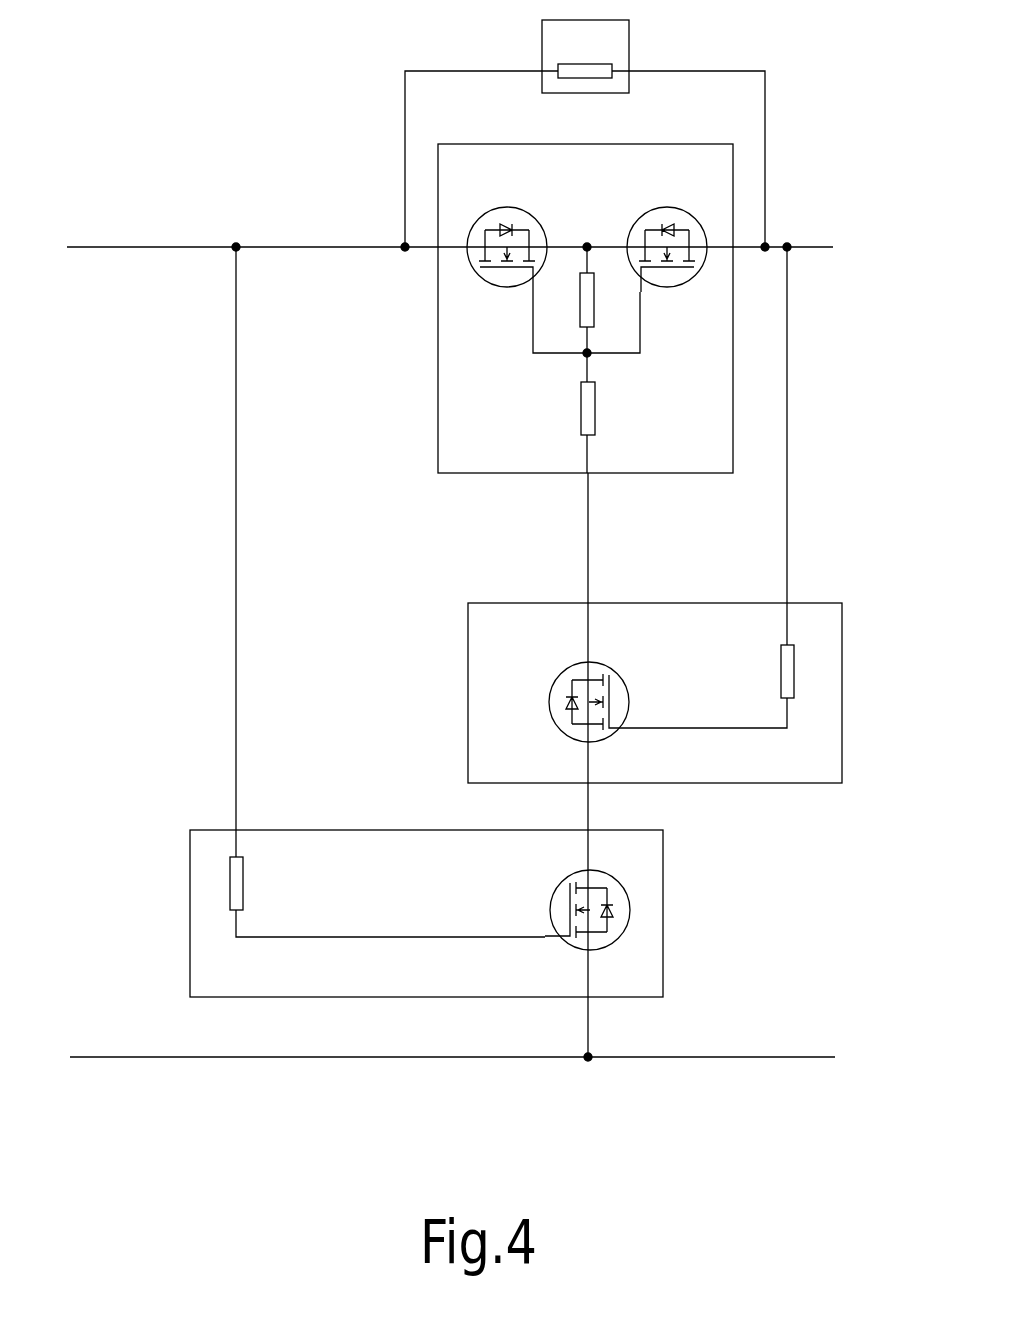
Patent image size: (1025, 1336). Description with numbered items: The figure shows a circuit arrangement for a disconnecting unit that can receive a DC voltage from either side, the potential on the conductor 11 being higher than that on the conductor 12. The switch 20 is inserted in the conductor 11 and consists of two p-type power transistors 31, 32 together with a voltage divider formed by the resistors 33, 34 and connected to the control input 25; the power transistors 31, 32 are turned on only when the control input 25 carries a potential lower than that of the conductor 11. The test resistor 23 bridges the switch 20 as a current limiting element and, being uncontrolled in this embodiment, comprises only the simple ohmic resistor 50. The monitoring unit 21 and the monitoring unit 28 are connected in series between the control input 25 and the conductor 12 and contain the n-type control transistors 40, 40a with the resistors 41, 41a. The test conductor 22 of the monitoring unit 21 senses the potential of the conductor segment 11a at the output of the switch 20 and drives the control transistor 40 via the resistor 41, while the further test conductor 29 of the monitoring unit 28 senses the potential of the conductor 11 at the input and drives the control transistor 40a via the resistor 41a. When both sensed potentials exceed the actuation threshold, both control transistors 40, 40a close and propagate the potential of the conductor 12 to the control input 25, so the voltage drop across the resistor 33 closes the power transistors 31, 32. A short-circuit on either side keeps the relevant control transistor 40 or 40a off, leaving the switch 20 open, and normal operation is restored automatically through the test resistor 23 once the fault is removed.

The conductor 11 is at (328, 246).
The conductor segment 11a is at (817, 247).
The conductor 12 is at (748, 1056).
The switch 20 is at (440, 377).
The monitoring unit 21 is at (468, 703).
The test conductor 22 is at (787, 502).
The test resistor 23 is at (629, 50).
The control input 25 is at (585, 482).
The monitoring unit 28 is at (663, 898).
The test conductor 29 is at (235, 570).
The power transistor 31 is at (485, 285).
The power transistor 32 is at (673, 285).
The resistor 33 is at (582, 314).
The resistor 34 is at (595, 402).
The control transistor 40 is at (550, 707).
The control transistor 40a is at (552, 912).
The resistor 41 is at (780, 662).
The resistor 41a is at (247, 892).
The ohmic resistor 50 is at (580, 62).